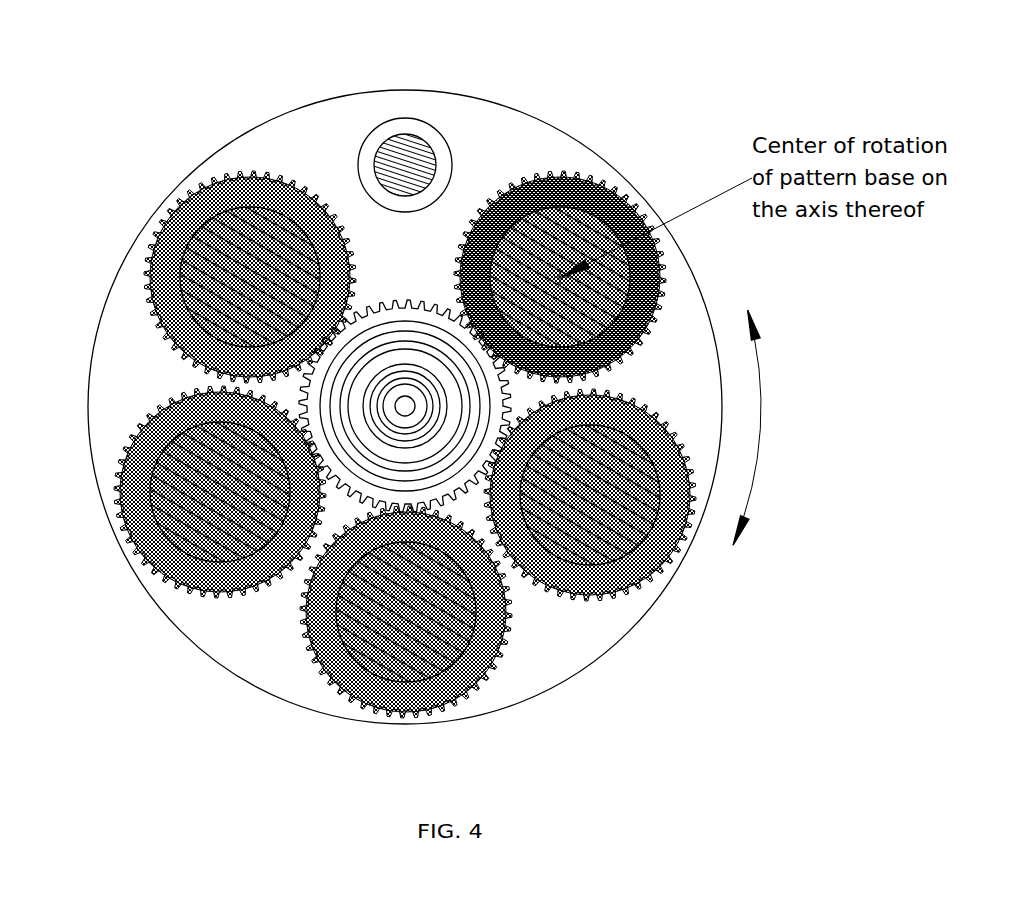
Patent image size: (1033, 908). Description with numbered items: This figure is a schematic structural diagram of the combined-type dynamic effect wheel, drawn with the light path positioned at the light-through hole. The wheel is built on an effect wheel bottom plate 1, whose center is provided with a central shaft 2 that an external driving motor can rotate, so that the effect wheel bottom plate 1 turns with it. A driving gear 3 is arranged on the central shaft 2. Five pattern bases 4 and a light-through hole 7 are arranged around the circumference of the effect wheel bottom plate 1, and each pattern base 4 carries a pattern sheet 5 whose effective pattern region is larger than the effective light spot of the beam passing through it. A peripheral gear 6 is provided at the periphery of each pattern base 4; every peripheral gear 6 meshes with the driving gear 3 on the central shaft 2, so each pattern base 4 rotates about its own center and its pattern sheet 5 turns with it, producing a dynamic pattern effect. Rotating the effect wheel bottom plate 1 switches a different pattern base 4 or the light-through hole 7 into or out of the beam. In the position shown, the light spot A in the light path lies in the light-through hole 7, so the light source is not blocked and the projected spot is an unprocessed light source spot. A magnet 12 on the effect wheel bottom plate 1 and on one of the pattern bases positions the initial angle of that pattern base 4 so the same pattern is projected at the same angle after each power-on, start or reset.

The effect wheel bottom plate 1 is at (657, 600).
The central shaft 2 is at (398, 414).
The driving gear 3 is at (472, 495).
The pattern base 4 is at (610, 195).
The pattern sheet 5 is at (613, 288).
The peripheral gear 6 is at (567, 173).
The light-through hole 7 is at (442, 135).
The magnet 12 is at (130, 538).
The light spot A is at (398, 135).